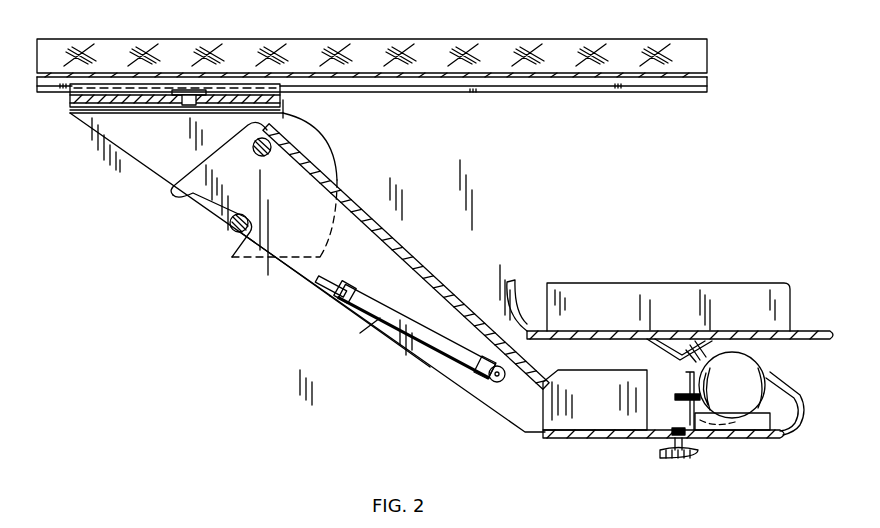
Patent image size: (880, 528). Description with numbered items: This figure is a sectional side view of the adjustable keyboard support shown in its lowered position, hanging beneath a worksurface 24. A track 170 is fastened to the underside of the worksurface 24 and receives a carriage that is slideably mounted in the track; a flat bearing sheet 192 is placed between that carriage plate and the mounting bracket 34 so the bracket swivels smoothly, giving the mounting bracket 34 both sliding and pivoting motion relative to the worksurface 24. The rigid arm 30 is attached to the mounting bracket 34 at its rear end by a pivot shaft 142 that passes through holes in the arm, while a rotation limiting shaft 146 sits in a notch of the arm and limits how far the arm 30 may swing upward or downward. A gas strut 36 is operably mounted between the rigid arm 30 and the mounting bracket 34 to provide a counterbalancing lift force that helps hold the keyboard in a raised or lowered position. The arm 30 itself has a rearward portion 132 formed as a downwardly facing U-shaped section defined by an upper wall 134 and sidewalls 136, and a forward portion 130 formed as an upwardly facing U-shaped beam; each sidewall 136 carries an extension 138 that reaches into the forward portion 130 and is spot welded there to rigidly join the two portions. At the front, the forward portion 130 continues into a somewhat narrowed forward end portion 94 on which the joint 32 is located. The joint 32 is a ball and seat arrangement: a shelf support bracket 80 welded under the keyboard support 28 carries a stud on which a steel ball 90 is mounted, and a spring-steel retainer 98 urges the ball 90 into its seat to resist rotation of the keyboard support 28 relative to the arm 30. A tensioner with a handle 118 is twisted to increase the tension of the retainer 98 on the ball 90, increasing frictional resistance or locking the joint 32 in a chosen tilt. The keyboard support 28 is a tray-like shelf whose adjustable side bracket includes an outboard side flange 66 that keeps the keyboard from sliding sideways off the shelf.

The worksurface 24 is at (512, 38).
The track 170 is at (522, 92).
The flat bearing sheet 192 is at (286, 98).
The mounting bracket 34 is at (157, 198).
The pivot shaft 142 is at (286, 136).
The rotation limiting shaft 146 is at (226, 236).
The upper wall 134 is at (405, 264).
The sidewalls 136 is at (408, 293).
The rearward portion 132 is at (296, 298).
The gas strut 36 is at (380, 330).
The rigid arm 30 is at (436, 378).
The keyboard support 28 is at (622, 330).
The outboard side flange 66 is at (778, 322).
The shelf support bracket 80 is at (662, 356).
The ball 90 is at (755, 365).
The retainer 98 is at (686, 404).
The extension 138 is at (583, 438).
The forward portion 130 is at (628, 440).
The handle 118 is at (680, 460).
The joint 32 is at (724, 443).
The forward end portion 94 is at (782, 440).